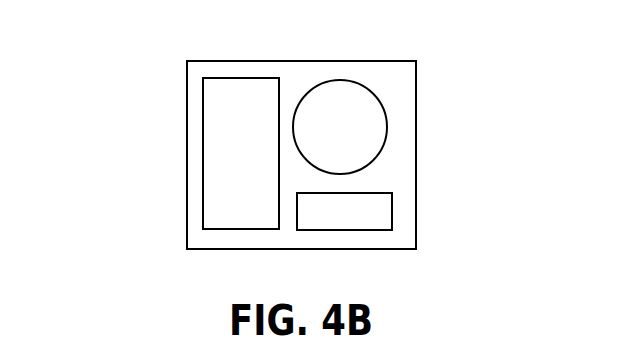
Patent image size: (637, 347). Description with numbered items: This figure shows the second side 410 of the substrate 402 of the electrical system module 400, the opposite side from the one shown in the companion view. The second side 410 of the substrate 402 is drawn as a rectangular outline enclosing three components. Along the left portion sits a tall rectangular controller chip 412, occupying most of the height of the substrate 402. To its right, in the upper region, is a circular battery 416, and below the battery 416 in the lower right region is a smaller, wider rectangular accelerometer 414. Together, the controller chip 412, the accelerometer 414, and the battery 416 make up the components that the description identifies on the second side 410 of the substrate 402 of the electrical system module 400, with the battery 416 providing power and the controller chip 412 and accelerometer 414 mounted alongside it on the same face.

The electrical system module 400 is at (125, 50).
The second side 410 is at (367, 77).
The substrate 402 is at (203, 153).
The controller chip 412 is at (235, 78).
The battery 416 is at (357, 120).
The accelerometer 414 is at (392, 205).